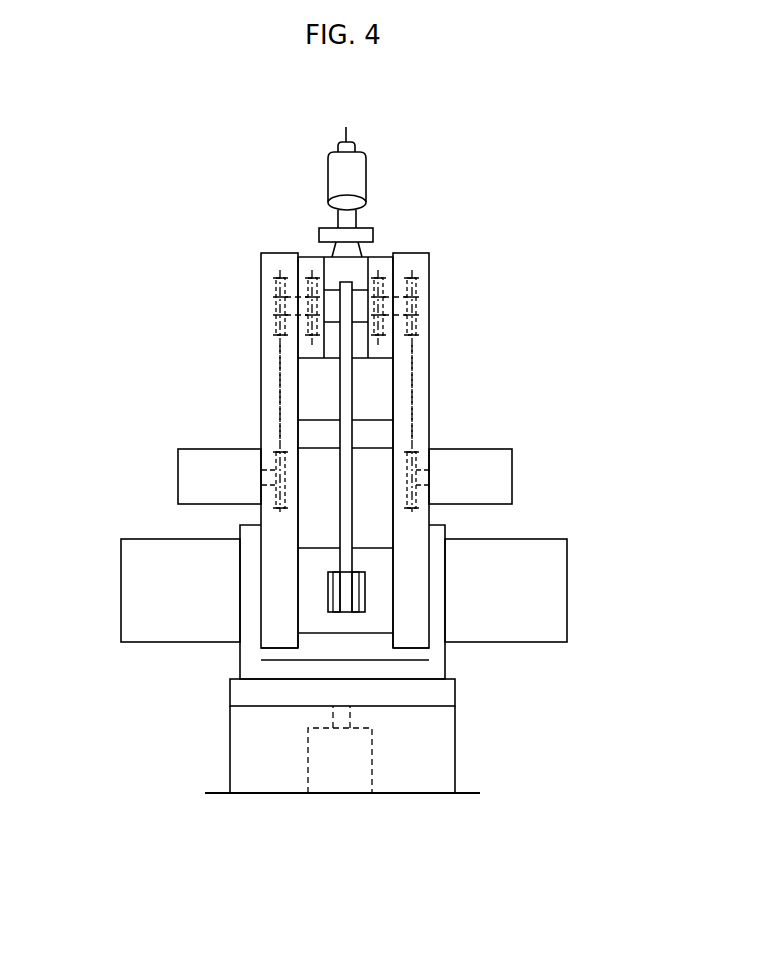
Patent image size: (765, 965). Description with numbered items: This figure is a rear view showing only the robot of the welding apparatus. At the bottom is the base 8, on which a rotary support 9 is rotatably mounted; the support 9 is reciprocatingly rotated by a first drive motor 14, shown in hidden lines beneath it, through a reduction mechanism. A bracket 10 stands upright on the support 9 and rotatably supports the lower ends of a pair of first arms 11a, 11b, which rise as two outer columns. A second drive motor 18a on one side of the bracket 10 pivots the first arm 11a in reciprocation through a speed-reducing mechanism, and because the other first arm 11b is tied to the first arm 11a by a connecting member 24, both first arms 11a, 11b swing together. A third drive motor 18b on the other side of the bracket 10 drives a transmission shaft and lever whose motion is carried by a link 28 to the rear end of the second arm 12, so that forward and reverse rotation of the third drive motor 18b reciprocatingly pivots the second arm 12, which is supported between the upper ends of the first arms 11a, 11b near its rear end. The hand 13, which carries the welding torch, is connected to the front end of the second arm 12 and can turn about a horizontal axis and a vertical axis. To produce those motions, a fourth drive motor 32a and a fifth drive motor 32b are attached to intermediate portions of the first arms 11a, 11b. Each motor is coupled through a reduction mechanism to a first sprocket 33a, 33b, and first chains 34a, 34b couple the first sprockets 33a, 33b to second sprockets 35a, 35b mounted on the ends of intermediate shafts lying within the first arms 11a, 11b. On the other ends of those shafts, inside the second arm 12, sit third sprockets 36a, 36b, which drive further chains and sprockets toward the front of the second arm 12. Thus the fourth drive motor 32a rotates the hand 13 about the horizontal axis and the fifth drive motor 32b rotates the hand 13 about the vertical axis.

The base 8 is at (455, 755).
The rotary support 9 is at (443, 695).
The bracket 10 is at (437, 588).
The first arm 11a is at (428, 412).
The first arm 11b is at (260, 407).
The second arm 12 is at (333, 350).
The hand 13 is at (363, 235).
The first drive motor 14 is at (373, 773).
The second drive motor 18a is at (557, 595).
The third drive motor 18b is at (128, 600).
The connecting member 24 is at (370, 437).
The link 28 is at (345, 473).
The fourth drive motor 32a is at (497, 472).
The fifth drive motor 32b is at (197, 465).
The first sprocket 33a is at (432, 510).
The first sprocket 33b is at (263, 510).
The first chain 34a is at (412, 372).
The first chain 34b is at (278, 370).
The second sprocket 35a is at (417, 287).
The second sprocket 35b is at (275, 283).
The third sprocket 36a is at (383, 268).
The third sprocket 36b is at (308, 272).